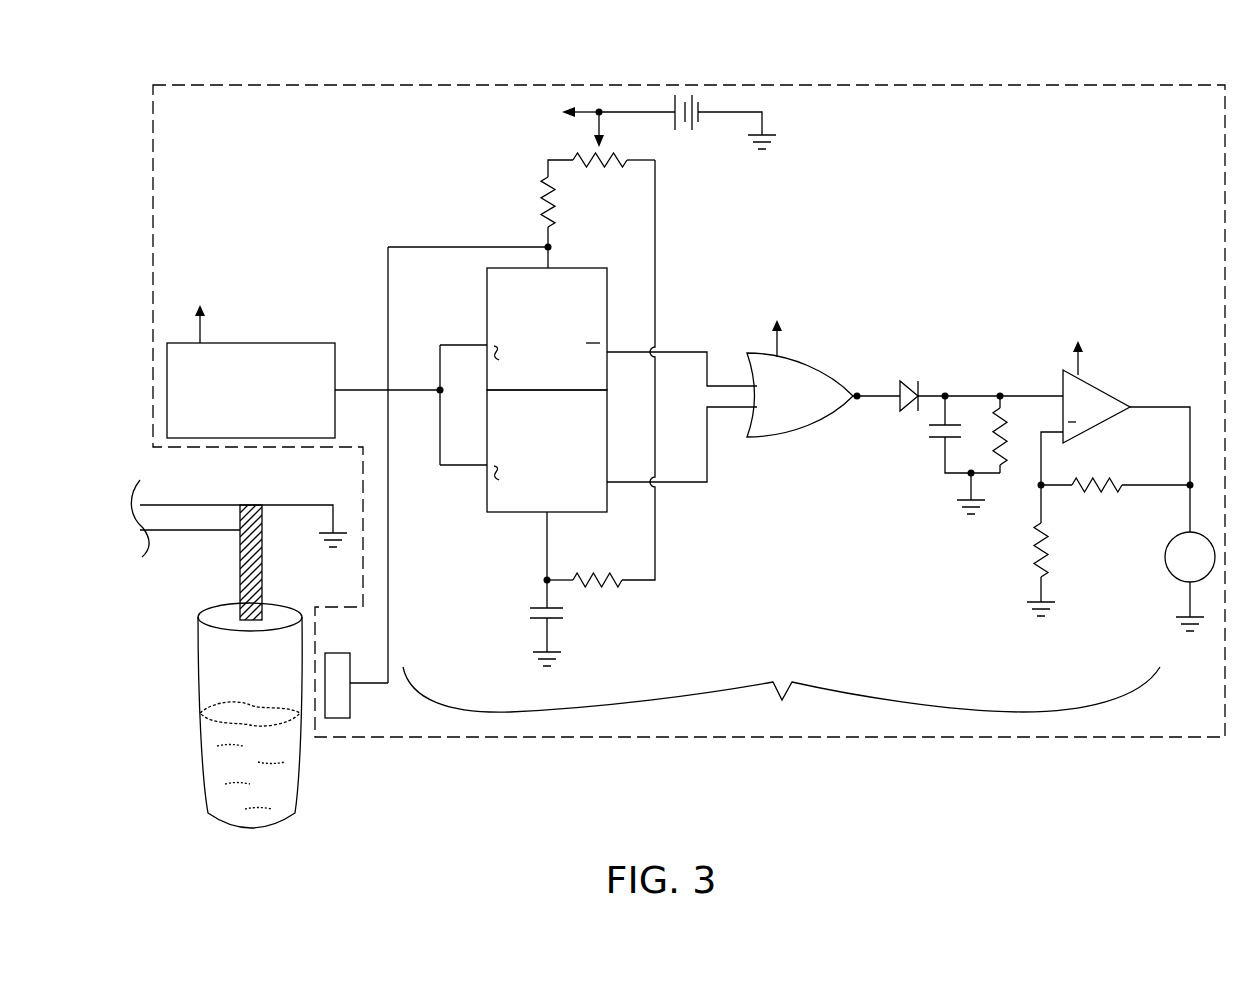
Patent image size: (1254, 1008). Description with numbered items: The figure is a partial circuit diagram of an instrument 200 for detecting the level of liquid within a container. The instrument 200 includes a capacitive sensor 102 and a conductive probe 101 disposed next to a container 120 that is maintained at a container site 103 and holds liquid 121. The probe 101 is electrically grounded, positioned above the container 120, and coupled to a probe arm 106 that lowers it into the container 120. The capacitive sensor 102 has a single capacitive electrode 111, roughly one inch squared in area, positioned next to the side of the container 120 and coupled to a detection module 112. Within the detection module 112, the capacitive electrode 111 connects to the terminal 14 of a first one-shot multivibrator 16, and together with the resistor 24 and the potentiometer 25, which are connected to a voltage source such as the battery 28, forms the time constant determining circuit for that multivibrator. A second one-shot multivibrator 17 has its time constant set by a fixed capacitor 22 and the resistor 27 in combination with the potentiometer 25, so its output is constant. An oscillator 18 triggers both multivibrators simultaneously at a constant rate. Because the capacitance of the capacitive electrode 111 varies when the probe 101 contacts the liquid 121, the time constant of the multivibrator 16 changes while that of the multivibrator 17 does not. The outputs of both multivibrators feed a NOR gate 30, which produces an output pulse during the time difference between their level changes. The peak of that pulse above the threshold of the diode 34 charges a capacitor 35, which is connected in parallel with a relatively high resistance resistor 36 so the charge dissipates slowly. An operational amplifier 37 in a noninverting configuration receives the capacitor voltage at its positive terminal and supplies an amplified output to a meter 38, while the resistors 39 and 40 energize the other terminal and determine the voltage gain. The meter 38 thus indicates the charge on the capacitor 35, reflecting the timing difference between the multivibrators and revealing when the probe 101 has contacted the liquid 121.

The instrument 200 is at (104, 94).
The capacitive sensor 102 is at (153, 229).
The oscillator 18 is at (273, 343).
The first one-shot multivibrator 16 is at (487, 298).
The second one-shot multivibrator 17 is at (487, 500).
The terminal 14 is at (550, 262).
The resistor 24 is at (540, 190).
The potentiometer 25 is at (600, 123).
The battery 28 is at (685, 127).
The resistor 27 is at (612, 590).
The fixed capacitor 22 is at (532, 612).
The NOR gate 30 is at (828, 368).
The diode 34 is at (908, 381).
The capacitor 35 is at (928, 428).
The resistor 36 is at (1010, 457).
The operational amplifier 37 is at (1107, 388).
The resistor 39 is at (1102, 478).
The resistor 40 is at (1033, 552).
The meter 38 is at (1168, 572).
The probe arm 106 is at (188, 505).
The probe 101 is at (240, 552).
The container 120 is at (200, 640).
The liquid 121 is at (208, 755).
The container site 103 is at (254, 848).
The capacitive electrode 111 is at (337, 712).
The detection module 112 is at (781, 695).